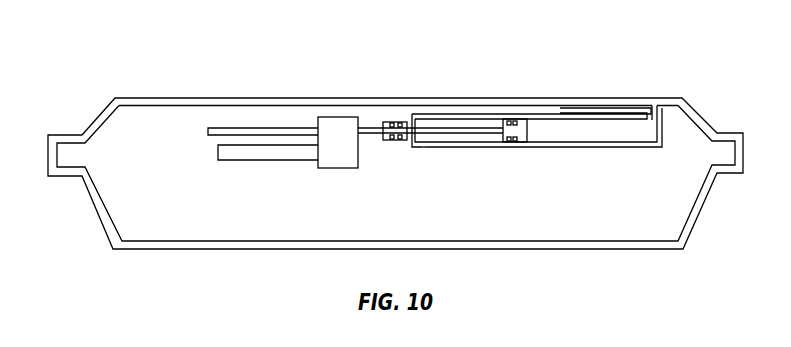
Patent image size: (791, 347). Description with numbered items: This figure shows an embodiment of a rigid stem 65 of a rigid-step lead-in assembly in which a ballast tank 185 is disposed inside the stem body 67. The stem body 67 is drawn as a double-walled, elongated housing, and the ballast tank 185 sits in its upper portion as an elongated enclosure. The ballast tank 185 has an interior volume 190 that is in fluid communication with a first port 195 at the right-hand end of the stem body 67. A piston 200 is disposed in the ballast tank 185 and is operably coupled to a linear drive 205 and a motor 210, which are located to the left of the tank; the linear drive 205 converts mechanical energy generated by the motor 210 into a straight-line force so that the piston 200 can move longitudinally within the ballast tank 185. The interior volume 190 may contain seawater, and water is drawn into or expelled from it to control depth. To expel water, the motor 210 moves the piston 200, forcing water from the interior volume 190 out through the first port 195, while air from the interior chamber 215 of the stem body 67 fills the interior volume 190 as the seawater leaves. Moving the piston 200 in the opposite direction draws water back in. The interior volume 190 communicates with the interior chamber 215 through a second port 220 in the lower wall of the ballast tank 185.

The rigid stem 65 is at (128, 72).
The stem body 67 is at (213, 98).
The ballast tank 185 is at (442, 113).
The interior volume 190 is at (610, 132).
The first port 195 is at (655, 102).
The piston 200 is at (517, 125).
The linear drive 205 is at (340, 158).
The motor 210 is at (258, 155).
The interior chamber 215 is at (297, 225).
The second port 220 is at (422, 148).